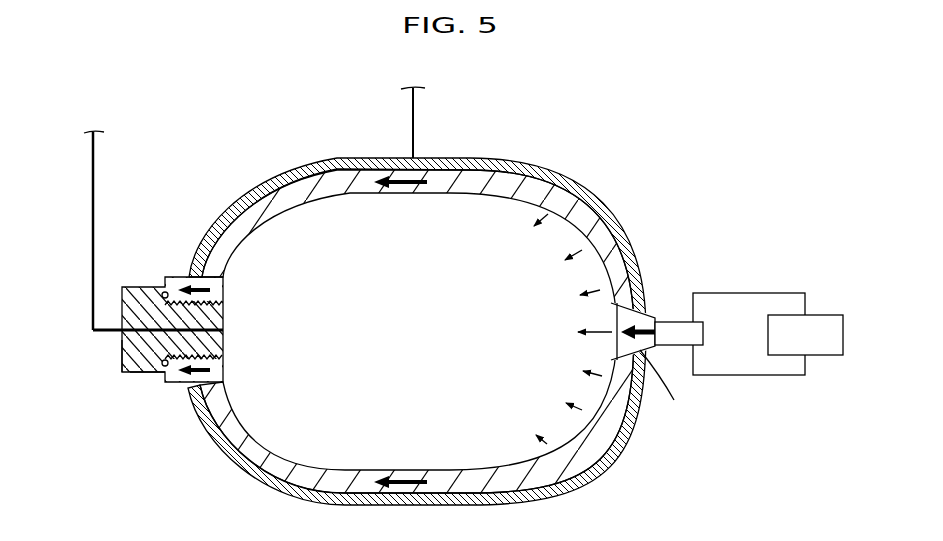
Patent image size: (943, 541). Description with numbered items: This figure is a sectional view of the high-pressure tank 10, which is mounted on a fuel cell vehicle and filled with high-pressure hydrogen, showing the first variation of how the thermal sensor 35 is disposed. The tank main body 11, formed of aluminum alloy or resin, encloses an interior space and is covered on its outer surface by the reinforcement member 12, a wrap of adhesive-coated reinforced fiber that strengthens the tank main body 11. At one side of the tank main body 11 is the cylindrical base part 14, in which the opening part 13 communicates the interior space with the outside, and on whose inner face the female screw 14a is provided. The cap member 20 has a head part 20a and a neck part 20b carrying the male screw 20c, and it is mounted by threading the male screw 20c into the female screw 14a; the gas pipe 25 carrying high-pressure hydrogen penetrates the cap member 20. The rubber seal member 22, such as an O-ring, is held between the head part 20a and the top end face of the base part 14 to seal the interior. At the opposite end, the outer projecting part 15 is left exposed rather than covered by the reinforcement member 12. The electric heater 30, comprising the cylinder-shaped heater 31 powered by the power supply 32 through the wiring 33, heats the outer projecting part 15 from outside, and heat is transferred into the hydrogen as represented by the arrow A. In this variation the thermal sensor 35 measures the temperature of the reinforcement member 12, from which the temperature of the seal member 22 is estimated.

The high-pressure tank 10 is at (335, 142).
The tank main body 11 is at (578, 218).
The reinforcement member 12 is at (563, 183).
The opening part 13 is at (251, 339).
The base part 14 is at (177, 381).
The female screw 14a is at (205, 342).
The outer projecting part 15 is at (651, 310).
The cap member 20 is at (178, 338).
The head part 20a is at (121, 361).
The neck part 20b is at (213, 318).
The male screw 20c is at (224, 294).
The seal member 22 is at (150, 375).
The gas pipe 25 is at (95, 165).
The electric heater 30 is at (756, 291).
The heater 31 is at (683, 321).
The power supply 32 is at (820, 315).
The wiring 33 is at (722, 293).
The thermal sensor 35 is at (414, 123).
The arrow A is at (647, 322).